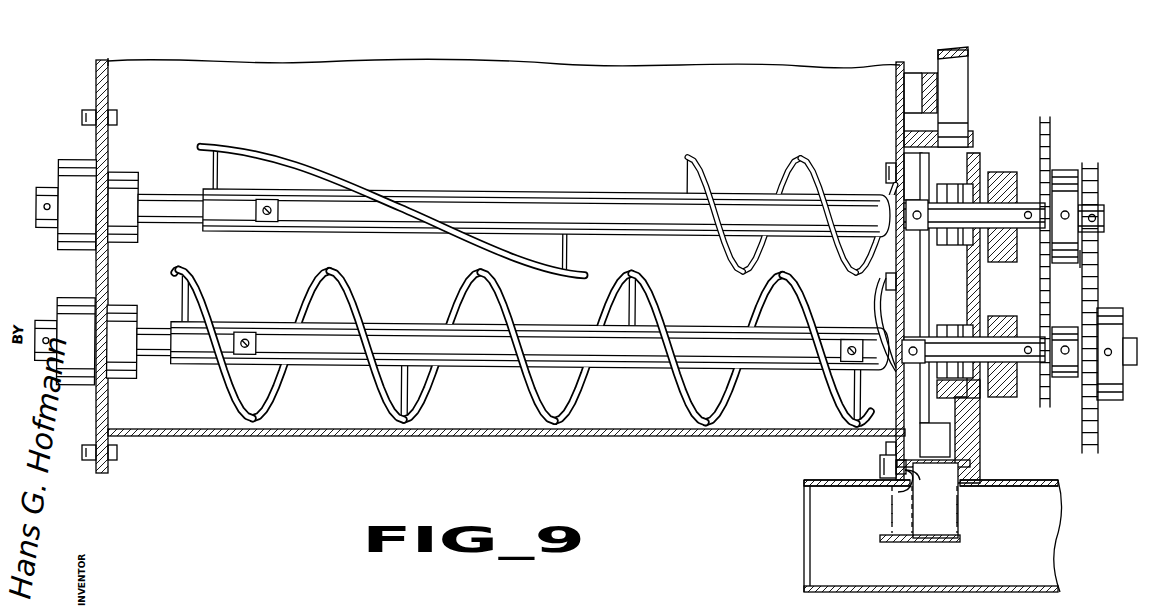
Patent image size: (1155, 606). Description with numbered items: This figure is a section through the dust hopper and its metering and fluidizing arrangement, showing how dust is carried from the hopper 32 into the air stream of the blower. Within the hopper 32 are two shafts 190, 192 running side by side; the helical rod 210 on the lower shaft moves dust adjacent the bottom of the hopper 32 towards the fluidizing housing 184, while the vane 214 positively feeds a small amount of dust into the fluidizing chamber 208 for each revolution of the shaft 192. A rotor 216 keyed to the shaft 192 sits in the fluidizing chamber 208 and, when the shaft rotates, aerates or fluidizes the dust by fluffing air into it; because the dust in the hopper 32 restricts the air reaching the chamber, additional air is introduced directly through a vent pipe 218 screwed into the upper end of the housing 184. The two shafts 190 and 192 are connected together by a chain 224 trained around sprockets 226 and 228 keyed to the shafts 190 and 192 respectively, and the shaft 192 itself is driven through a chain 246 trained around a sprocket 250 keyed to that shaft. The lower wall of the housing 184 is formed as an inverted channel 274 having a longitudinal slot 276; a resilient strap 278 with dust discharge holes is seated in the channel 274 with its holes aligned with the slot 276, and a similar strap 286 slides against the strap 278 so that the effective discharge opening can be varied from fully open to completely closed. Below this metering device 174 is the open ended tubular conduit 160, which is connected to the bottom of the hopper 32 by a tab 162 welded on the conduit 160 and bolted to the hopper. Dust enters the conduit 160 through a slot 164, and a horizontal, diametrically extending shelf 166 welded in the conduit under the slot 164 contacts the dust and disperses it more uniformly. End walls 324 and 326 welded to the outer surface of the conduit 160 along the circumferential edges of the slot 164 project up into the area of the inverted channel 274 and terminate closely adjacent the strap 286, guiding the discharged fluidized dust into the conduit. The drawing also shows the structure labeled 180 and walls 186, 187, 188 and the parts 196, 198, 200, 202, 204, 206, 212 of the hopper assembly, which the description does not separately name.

The hopper 32 is at (608, 440).
The tubular conduit 160 is at (857, 575).
The tab 162 is at (890, 468).
The slot 164 is at (945, 482).
The shelf 166 is at (930, 542).
The metering device 174 is at (1008, 165).
The stirring unit 180 is at (539, 125).
The fluidizing housing 184 is at (985, 175).
The end wall 186 is at (896, 84).
The end wall 187 is at (98, 272).
The side wall 188 is at (110, 82).
The shaft 190 is at (160, 205).
The shaft 192 is at (148, 345).
The bearing 196 is at (1000, 215).
The upper tube 198 is at (512, 210).
The lower tube 200 is at (548, 337).
The curved band 202 is at (333, 180).
The peg 204 is at (216, 174).
The helical flight 206 is at (800, 165).
The fluidizing chamber 208 is at (900, 152).
The helical rod 210 is at (385, 388).
The peg 212 is at (184, 292).
The vane 214 is at (877, 297).
The rotor 216 is at (928, 310).
The vent pipe 218 is at (950, 63).
The chain 224 is at (1047, 138).
The sprocket 226 is at (1047, 206).
The sprocket 228 is at (1047, 353).
The chain 246 is at (1085, 258).
The sprocket 250 is at (1060, 385).
The inverted channel 274 is at (968, 470).
The slot 276 is at (945, 450).
The resilient strap 278 is at (896, 448).
The strap 286 is at (913, 495).
The end wall 324 is at (905, 518).
The end wall 326 is at (960, 525).